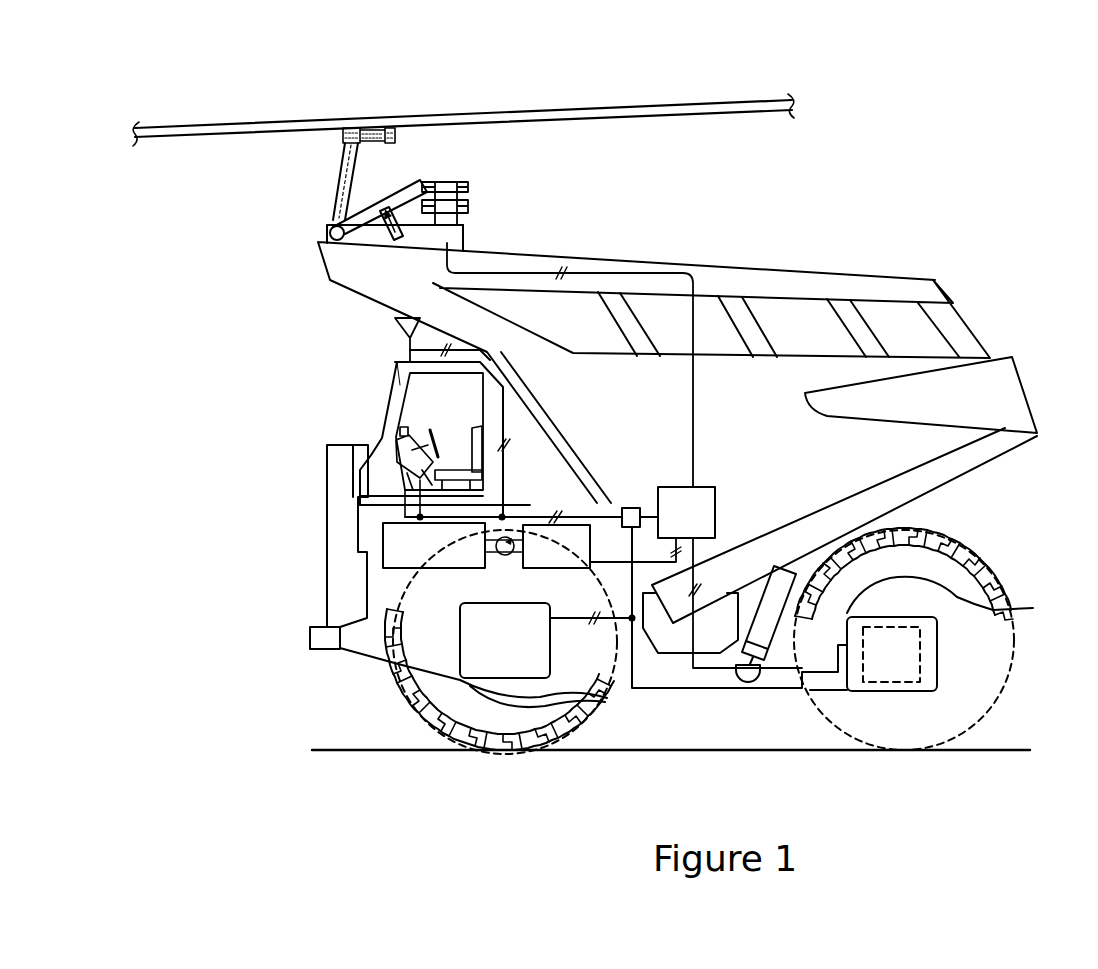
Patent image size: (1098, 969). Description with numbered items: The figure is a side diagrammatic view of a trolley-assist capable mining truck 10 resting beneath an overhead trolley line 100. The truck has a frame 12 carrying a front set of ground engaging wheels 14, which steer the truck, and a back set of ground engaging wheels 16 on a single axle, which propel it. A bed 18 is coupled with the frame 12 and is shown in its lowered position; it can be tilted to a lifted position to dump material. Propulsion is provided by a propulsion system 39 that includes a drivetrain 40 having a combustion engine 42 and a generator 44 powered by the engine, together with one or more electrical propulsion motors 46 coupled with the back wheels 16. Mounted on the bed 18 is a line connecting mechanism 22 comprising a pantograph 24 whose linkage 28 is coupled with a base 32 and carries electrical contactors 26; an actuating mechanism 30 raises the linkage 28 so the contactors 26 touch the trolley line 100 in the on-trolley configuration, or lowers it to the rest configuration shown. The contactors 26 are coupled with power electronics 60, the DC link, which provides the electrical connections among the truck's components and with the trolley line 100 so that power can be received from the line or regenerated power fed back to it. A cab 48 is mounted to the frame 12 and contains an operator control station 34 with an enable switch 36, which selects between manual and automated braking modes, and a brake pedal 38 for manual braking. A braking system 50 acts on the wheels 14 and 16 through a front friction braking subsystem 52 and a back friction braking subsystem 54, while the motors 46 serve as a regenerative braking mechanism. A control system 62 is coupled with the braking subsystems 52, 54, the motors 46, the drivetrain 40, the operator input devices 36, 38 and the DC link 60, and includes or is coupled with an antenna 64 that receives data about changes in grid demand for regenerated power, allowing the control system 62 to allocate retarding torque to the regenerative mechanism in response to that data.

The overhead trolley line 100 is at (164, 118).
The mining truck 10 is at (998, 298).
The frame 12 is at (326, 650).
The front set of ground engaging wheels 14 is at (447, 723).
The back set of ground engaging wheels 16 is at (986, 563).
The bed 18 is at (1037, 433).
The line connecting mechanism 22 is at (313, 208).
The pantograph 24 is at (329, 237).
The electrical contactors 26 is at (460, 182).
The linkage 28 is at (383, 204).
The actuating mechanism 30 is at (396, 244).
The base 32 is at (463, 237).
The operator control station 34 is at (377, 418).
The enable switch 36 is at (406, 430).
The brake pedal 38 is at (455, 471).
The propulsion system 39 is at (734, 514).
The drivetrain 40 is at (378, 576).
The combustion engine 42 is at (430, 568).
The generator 44 is at (565, 568).
The electrical propulsion motor 46 is at (920, 641).
The cab 48 is at (400, 384).
The braking system 50 is at (558, 671).
The front friction braking subsystem 52 is at (460, 636).
The back friction braking subsystem 54 is at (898, 693).
The power electronics 60 is at (680, 487).
The control system 62 is at (631, 508).
The antenna 64 is at (410, 345).